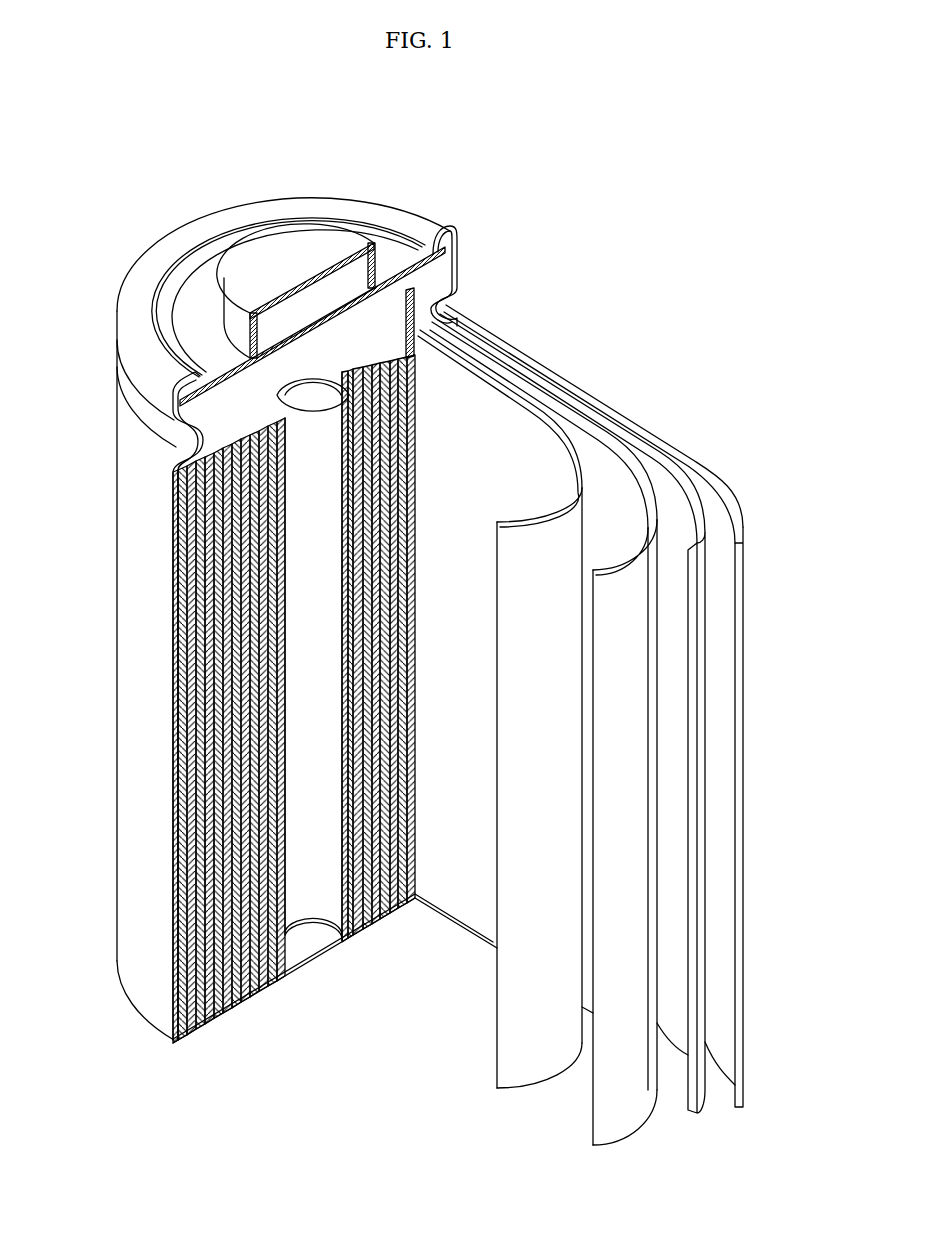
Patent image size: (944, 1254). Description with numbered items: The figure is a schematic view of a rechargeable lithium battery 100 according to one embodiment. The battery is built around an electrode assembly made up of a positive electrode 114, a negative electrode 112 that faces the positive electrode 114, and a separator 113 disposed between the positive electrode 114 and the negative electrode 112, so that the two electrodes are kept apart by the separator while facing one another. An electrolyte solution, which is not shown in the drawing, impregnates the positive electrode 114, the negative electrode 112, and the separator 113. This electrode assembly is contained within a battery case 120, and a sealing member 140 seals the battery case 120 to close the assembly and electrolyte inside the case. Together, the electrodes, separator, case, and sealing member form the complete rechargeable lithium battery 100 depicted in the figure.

The rechargeable lithium battery 100 is at (519, 176).
The negative electrode 112 is at (740, 525).
The separator 113 is at (535, 400).
The positive electrode 114 is at (620, 468).
The battery case 120 is at (132, 624).
The sealing member 140 is at (250, 262).